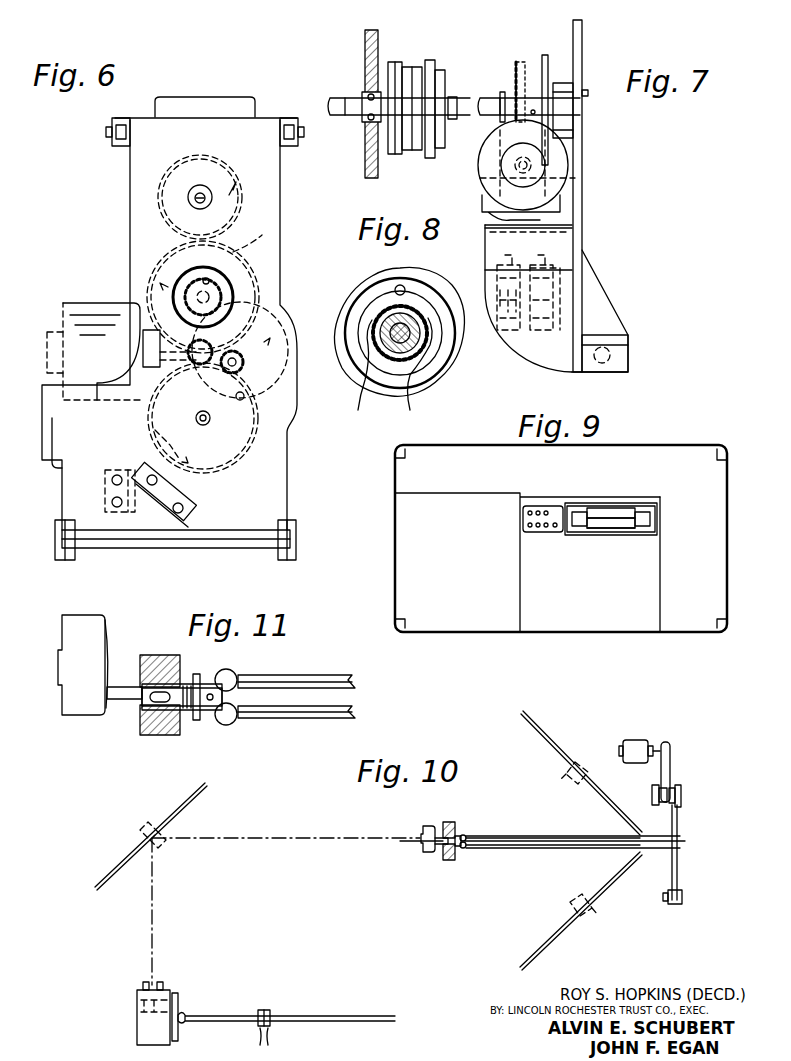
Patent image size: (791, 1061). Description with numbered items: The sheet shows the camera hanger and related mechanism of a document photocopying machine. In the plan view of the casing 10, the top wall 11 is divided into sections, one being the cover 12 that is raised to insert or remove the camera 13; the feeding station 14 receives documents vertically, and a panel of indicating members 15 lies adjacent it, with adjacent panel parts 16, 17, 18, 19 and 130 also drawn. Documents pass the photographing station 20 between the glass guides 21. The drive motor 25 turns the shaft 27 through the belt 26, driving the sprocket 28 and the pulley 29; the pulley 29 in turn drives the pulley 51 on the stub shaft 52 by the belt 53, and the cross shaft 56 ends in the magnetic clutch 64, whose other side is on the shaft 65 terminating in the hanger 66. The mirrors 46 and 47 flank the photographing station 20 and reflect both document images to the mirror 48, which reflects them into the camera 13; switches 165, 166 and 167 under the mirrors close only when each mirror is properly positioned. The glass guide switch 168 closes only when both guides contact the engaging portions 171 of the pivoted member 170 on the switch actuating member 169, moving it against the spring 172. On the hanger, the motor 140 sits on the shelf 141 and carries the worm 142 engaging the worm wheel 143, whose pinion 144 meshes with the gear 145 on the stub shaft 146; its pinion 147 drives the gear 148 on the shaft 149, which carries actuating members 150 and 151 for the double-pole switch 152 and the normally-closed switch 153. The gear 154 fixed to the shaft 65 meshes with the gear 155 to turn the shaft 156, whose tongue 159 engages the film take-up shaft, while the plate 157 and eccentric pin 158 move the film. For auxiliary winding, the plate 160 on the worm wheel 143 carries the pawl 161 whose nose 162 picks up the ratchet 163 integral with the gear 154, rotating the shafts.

In FIG. 9, the casing 10 is at (668, 446).
In FIG. 9, the top wall 11 is at (710, 545).
In FIG. 9, the cover 12 is at (400, 540).
In FIG. 10, the camera 13 is at (138, 1023).
In FIG. 9, the feeding station 14 is at (588, 506).
In FIG. 9, the panel of indicating members 15 is at (533, 506).
In FIG. 9, the panel end 16 is at (650, 508).
In FIG. 9, the panel frame 17 is at (660, 524).
In FIG. 9, the slide 18 is at (610, 533).
In FIG. 9, the slide ends 19 is at (578, 533).
In FIG. 10, the photographing station 20 is at (522, 847).
In FIG. 11, the glass guides 21 is at (312, 680).
In FIG. 10, the glass guides 21 is at (536, 836).
In FIG. 10, the motor 25 is at (638, 740).
In FIG. 10, the belt 26 is at (672, 770).
In FIG. 10, the shaft 27 is at (676, 805).
In FIG. 10, the sprocket 28 is at (652, 800).
In FIG. 10, the pulley 29 is at (682, 796).
In FIG. 10, the mirror 46 is at (548, 745).
In FIG. 10, the mirror 47 is at (548, 936).
In FIG. 10, the mirror 48 is at (190, 800).
In FIG. 10, the pulley 51 is at (682, 897).
In FIG. 10, the stub shaft 52 is at (663, 899).
In FIG. 10, the belt 53 is at (678, 865).
In FIG. 10, the shaft 56 is at (346, 1016).
In FIG. 7, the magnetic clutch 64 is at (412, 67).
In FIG. 10, the magnetic clutch 64 is at (274, 1010).
In FIG. 6, the shaft 65 is at (175, 275).
In FIG. 8, the shaft 65 is at (422, 336).
In FIG. 10, the shaft 65 is at (216, 1024).
In FIG. 6, the hanger 66 is at (280, 230).
In FIG. 7, the hanger 66 is at (584, 218).
In FIG. 10, the hanger 66 is at (178, 1000).
In FIG. 9, the slide 130 is at (618, 508).
In FIG. 6, the motor 140 is at (97, 303).
In FIG. 7, the motor 140 is at (545, 164).
In FIG. 7, the shelf 141 is at (555, 230).
In FIG. 6, the worm 142 is at (222, 300).
In FIG. 7, the worm 142 is at (550, 150).
In FIG. 6, the worm wheel 143 is at (250, 290).
In FIG. 7, the worm wheel 143 is at (520, 62).
In FIG. 6, the pinion 144 is at (255, 272).
In FIG. 7, the pinion 144 is at (498, 92).
In FIG. 6, the gear 145 is at (280, 379).
In FIG. 7, the gear 145 is at (478, 178).
In FIG. 6, the stub shaft 146 is at (236, 366).
In FIG. 6, the pinion 147 is at (245, 360).
In FIG. 7, the pinion 147 is at (560, 181).
In FIG. 6, the gear 148 is at (232, 470).
In FIG. 7, the gear 148 is at (540, 250).
In FIG. 6, the shaft 149 is at (208, 422).
In FIG. 6, the actuating member 150 is at (150, 430).
In FIG. 7, the actuating member 150 is at (560, 268).
In FIG. 6, the actuating member 151 is at (236, 394).
In FIG. 7, the actuating member 151 is at (535, 197).
In FIG. 6, the double-pole switch 152 is at (183, 494).
In FIG. 7, the double-pole switch 152 is at (555, 304).
In FIG. 7, the normally-closed switch 153 is at (520, 345).
In FIG. 6, the gear 154 is at (240, 250).
In FIG. 7, the gear 154 is at (547, 73).
In FIG. 6, the gear 155 is at (245, 197).
In FIG. 6, the shaft 156 is at (212, 192).
In FIG. 6, the plate 157 is at (180, 285).
In FIG. 7, the plate 157 is at (576, 128).
In FIG. 6, the eccentric pin 158 is at (204, 278).
In FIG. 7, the eccentric pin 158 is at (589, 93).
In FIG. 6, the tongue 159 is at (198, 193).
In FIG. 7, the plate 160 is at (545, 58).
In FIG. 8, the plate 160 is at (438, 378).
In FIG. 8, the pawl 161 is at (406, 287).
In FIG. 8, the nose 162 is at (389, 367).
In FIG. 8, the ratchet 163 is at (425, 374).
In FIG. 10, the switch 165 is at (570, 778).
In FIG. 10, the switch 166 is at (590, 920).
In FIG. 10, the switch 167 is at (162, 842).
In FIG. 11, the switch 168 is at (82, 705).
In FIG. 10, the switch 168 is at (424, 855).
In FIG. 11, the switch actuating member 169 is at (120, 687).
In FIG. 10, the switch actuating member 169 is at (444, 860).
In FIG. 11, the pivoted member 170 is at (213, 714).
In FIG. 10, the pivoted member 170 is at (464, 834).
In FIG. 11, the engaging portion 171 is at (230, 676).
In FIG. 11, the spring 172 is at (200, 669).